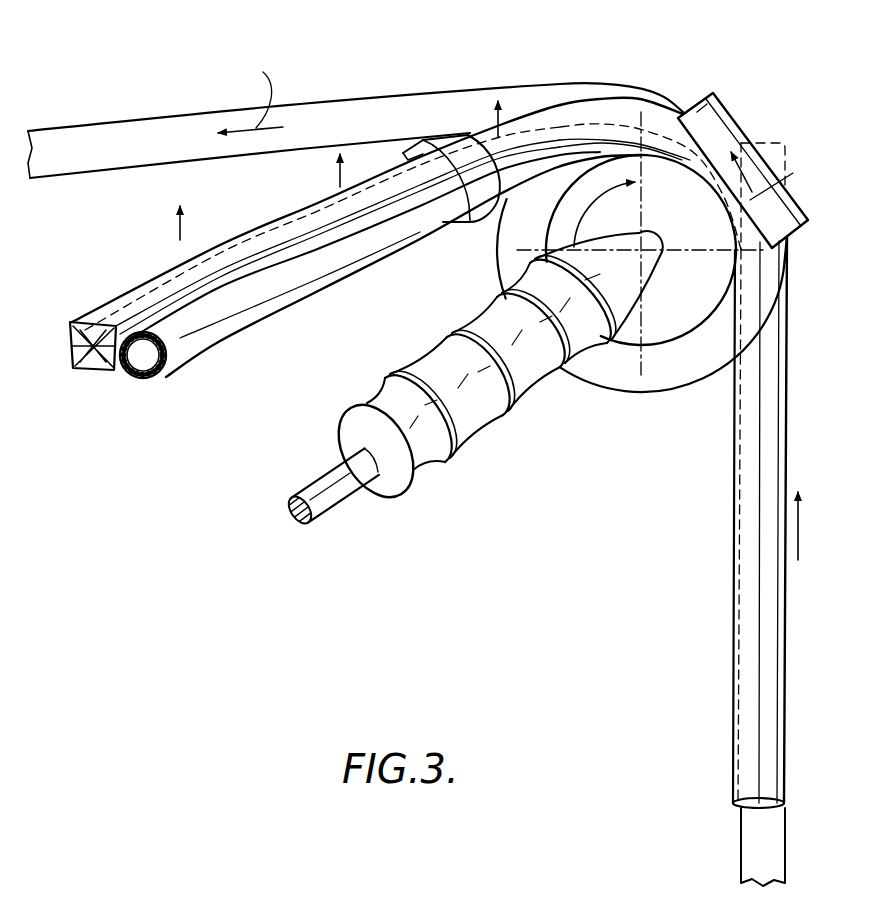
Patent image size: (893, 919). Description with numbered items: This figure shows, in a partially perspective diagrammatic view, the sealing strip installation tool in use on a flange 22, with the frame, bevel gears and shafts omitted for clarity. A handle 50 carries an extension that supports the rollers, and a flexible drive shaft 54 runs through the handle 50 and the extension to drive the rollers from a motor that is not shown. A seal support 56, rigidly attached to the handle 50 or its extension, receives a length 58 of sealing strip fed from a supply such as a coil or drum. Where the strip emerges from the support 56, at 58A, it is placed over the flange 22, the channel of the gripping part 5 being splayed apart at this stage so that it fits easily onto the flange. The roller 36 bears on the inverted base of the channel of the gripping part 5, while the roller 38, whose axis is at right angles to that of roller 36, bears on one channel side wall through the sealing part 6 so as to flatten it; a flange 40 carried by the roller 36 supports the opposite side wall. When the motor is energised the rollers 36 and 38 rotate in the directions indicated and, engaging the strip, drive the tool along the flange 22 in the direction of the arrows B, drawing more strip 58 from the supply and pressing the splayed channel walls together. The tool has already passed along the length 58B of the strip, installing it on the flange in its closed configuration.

The gripping part 5 is at (92, 372).
The sealing part 6 is at (147, 383).
The flange 22 is at (132, 137).
The roller 36 is at (690, 300).
The roller 38 is at (797, 198).
The flange 40 is at (655, 357).
The handle 50 is at (528, 410).
The flexible drive shaft 54 is at (355, 480).
The seal support 56 is at (447, 224).
The length of sealing strip 58 is at (286, 318).
The emerging portion of sealing strip 58A is at (612, 115).
The installed length of strip 58B is at (776, 640).